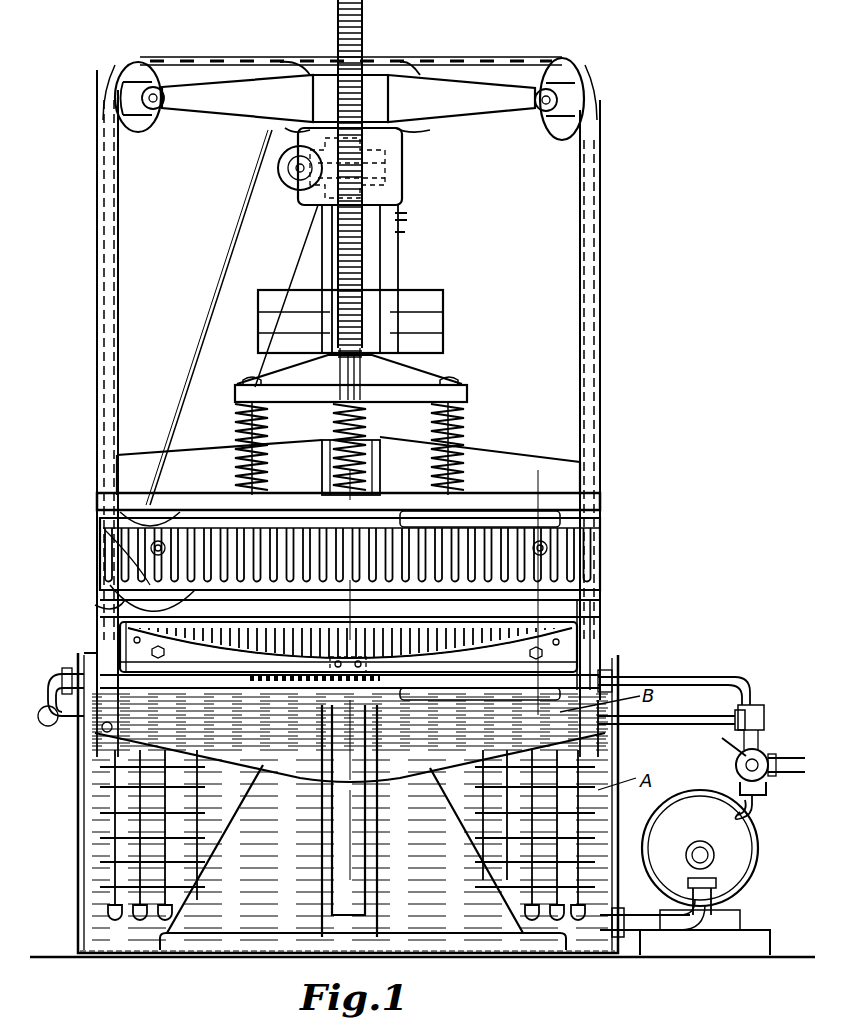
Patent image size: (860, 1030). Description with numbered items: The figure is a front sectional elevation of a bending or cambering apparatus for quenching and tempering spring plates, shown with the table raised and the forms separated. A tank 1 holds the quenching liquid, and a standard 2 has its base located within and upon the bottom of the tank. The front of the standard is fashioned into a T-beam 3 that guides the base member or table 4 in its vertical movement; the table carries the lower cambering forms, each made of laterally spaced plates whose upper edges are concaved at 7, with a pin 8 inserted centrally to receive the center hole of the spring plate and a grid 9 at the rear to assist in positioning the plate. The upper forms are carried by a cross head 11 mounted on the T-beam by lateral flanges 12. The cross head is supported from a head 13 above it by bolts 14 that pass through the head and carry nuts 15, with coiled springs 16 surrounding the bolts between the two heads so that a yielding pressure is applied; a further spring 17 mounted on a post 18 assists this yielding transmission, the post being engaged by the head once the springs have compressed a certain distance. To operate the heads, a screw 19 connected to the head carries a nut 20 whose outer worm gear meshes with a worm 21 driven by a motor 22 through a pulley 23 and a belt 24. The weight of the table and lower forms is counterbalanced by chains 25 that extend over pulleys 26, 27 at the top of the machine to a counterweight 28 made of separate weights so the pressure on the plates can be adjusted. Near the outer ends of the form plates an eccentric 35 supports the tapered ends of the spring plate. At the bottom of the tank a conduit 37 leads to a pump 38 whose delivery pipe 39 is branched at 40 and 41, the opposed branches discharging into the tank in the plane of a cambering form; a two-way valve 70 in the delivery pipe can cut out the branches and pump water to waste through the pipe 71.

The tank 1 is at (78, 870).
The standard 2 is at (378, 942).
The T-beam 3 is at (345, 465).
The table 4 is at (520, 487).
The concaved upper edge 7 is at (350, 647).
The pin 8 is at (346, 622).
The grid 9 is at (420, 630).
The cross head 11 is at (348, 482).
The lateral flanges 12 is at (350, 200).
The head 13 is at (349, 369).
The bolts 14 is at (236, 440).
The nuts 15 is at (462, 385).
The coiled springs 16 is at (232, 458).
The spring 17 is at (366, 426).
The post 18 is at (382, 440).
The screw 19 is at (398, 215).
The nut 20 is at (388, 170).
The worm 21 is at (292, 185).
The motor 22 is at (98, 606).
The pulley 23 is at (160, 512).
The belt 24 is at (198, 345).
The chains 25 is at (118, 332).
The pulley 26 is at (116, 78).
The pulley 27 is at (300, 70).
The counterweight 28 is at (443, 312).
The eccentric 35 is at (548, 645).
The conduit 37 is at (652, 912).
The pump 38 is at (705, 872).
The delivery pipe 39 is at (766, 798).
The branch 40 is at (68, 672).
The branch 41 is at (688, 682).
The two-way valve 70 is at (736, 770).
The waste pipe 71 is at (790, 758).